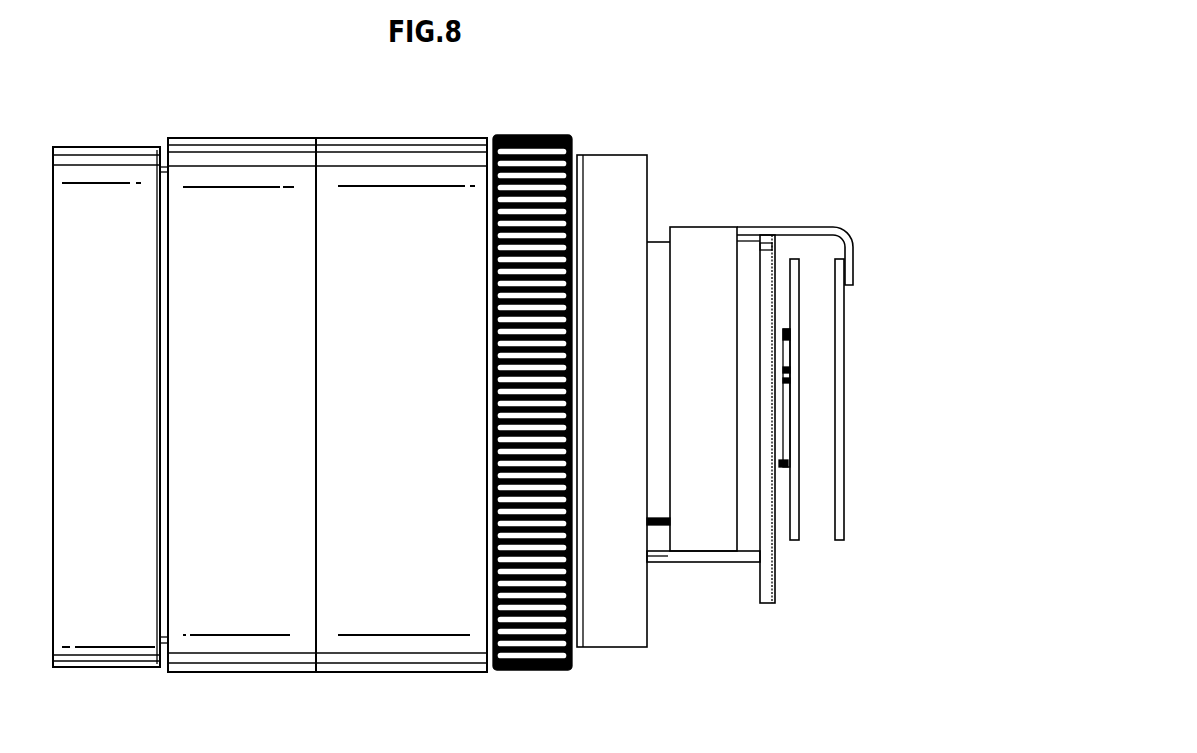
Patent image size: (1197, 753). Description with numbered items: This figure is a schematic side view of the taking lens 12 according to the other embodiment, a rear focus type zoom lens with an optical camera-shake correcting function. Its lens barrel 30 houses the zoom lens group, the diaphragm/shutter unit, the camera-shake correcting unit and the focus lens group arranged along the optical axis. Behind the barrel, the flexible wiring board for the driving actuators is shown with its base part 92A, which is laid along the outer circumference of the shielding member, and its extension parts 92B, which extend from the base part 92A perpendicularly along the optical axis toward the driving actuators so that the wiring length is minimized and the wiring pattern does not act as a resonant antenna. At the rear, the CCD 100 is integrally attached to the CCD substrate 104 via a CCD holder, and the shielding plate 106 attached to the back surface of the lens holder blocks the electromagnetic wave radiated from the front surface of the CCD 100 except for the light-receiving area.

The taking lens 12 is at (328, 111).
The lens barrel 30 is at (422, 148).
The base part 92A is at (705, 237).
The extension parts 92B is at (662, 538).
The CCD 100 is at (790, 407).
The CCD substrate 104 is at (802, 512).
The shielding plate 106 is at (777, 567).